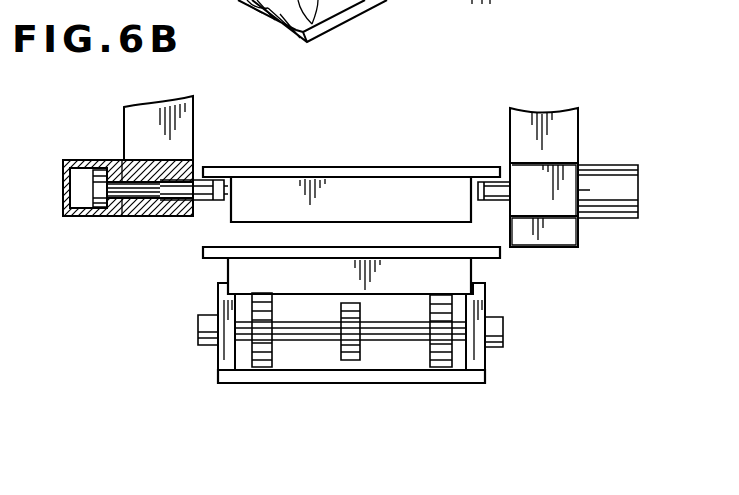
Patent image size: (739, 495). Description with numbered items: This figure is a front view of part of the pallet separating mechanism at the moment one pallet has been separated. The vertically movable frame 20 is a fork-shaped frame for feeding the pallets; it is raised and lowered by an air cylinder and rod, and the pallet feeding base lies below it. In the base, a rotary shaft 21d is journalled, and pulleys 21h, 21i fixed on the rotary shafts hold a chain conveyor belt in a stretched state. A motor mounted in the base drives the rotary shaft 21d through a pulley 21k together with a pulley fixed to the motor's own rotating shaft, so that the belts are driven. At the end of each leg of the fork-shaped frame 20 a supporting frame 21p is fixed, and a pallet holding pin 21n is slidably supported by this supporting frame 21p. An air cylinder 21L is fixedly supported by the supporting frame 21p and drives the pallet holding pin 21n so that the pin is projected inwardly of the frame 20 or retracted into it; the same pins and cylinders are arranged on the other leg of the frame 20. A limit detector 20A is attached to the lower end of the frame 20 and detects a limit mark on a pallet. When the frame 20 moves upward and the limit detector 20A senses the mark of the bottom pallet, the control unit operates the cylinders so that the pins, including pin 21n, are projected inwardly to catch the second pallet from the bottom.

The vertically movable frame 20 is at (145, 125).
The limit detector 20A is at (570, 228).
The air cylinder 21L is at (625, 170).
The supporting frame 21p is at (150, 213).
The pallet holding pin 21n is at (210, 185).
The pulley 21h is at (262, 345).
The pulley 21k is at (350, 340).
The rotary shaft 21d is at (392, 332).
The pulley 21i is at (441, 345).